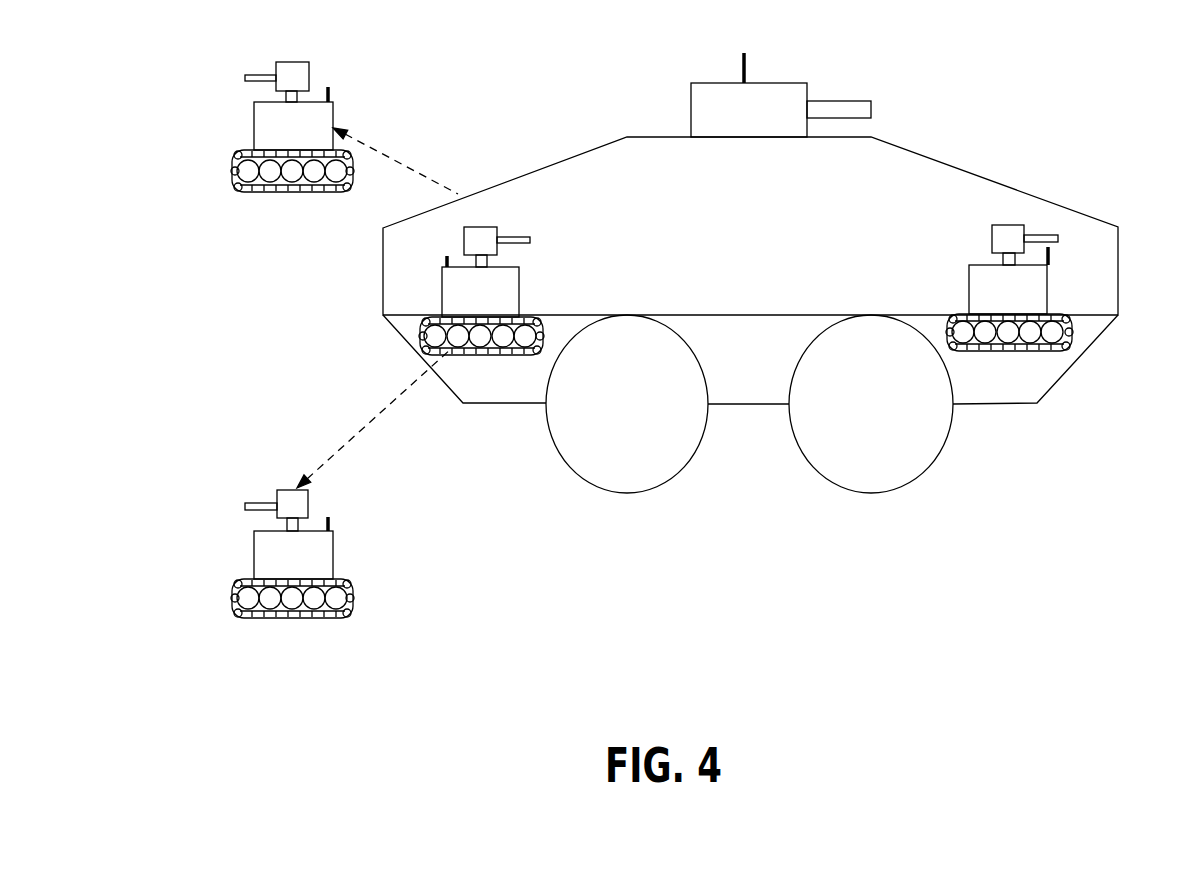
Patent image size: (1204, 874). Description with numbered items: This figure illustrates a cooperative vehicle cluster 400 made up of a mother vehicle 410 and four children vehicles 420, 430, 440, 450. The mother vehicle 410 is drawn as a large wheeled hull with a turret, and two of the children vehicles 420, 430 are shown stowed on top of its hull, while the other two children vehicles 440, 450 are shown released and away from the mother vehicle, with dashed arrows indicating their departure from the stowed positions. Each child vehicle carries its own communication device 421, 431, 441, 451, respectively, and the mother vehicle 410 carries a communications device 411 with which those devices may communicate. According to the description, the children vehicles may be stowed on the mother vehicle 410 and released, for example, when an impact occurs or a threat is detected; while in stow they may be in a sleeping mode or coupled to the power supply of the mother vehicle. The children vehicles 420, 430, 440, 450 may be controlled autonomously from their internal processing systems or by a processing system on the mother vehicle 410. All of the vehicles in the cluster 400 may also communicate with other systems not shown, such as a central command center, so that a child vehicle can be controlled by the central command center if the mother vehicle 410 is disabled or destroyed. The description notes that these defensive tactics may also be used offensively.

The cooperative vehicle cluster 400 is at (1156, 382).
The mother vehicle 410 is at (645, 137).
The communications device 411 is at (744, 56).
The child vehicle 420 is at (442, 276).
The communication device 421 is at (447, 257).
The child vehicle 430 is at (969, 266).
The communication device 431 is at (1049, 253).
The child vehicle 440 is at (254, 124).
The communication device 441 is at (328, 88).
The child vehicle 450 is at (254, 551).
The communication device 451 is at (328, 518).